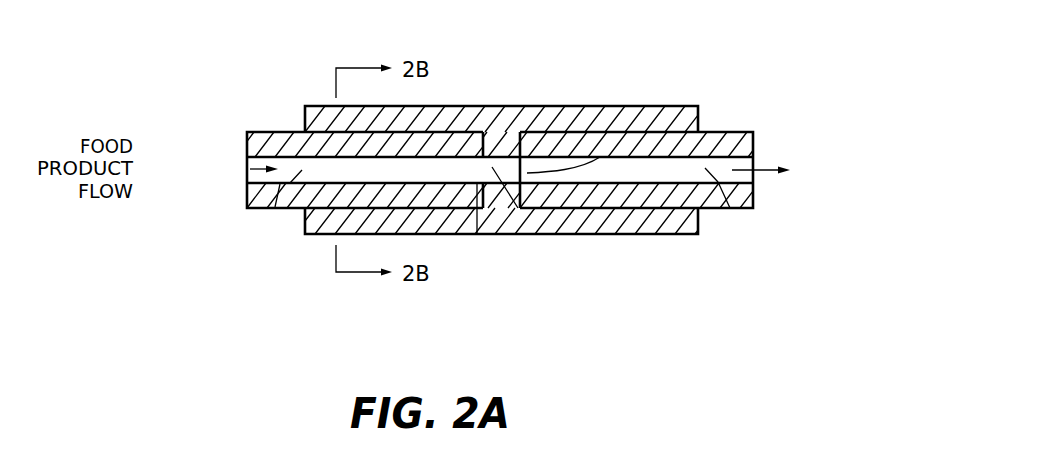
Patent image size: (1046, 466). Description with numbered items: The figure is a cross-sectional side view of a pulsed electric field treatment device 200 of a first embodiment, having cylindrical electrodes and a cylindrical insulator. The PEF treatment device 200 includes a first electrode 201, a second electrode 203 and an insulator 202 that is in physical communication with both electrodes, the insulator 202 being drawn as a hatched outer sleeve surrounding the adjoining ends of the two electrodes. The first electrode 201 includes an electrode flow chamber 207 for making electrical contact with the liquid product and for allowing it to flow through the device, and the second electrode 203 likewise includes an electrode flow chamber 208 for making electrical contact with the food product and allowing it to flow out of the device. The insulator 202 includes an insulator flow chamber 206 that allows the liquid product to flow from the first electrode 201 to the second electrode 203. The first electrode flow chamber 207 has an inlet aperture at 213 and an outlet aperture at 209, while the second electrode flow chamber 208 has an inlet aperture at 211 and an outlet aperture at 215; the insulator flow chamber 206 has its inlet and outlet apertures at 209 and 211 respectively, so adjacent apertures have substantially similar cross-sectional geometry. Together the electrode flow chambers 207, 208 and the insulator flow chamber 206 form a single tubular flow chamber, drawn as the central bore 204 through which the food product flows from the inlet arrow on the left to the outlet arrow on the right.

The pulsed electric field treatment device 200 is at (232, 223).
The first electrode 201 is at (248, 132).
The insulator 202 is at (520, 106).
The second electrode 203 is at (753, 132).
The bore / flow passage 204 is at (248, 169).
The insulator flow chamber 206 is at (520, 208).
The electrode flow chamber 207 is at (275, 207).
The electrode flow chamber 208 is at (730, 208).
The outlet aperture 209 is at (477, 233).
The inlet aperture 211 is at (600, 157).
The inlet aperture 213 is at (247, 163).
The outlet aperture 215 is at (757, 158).